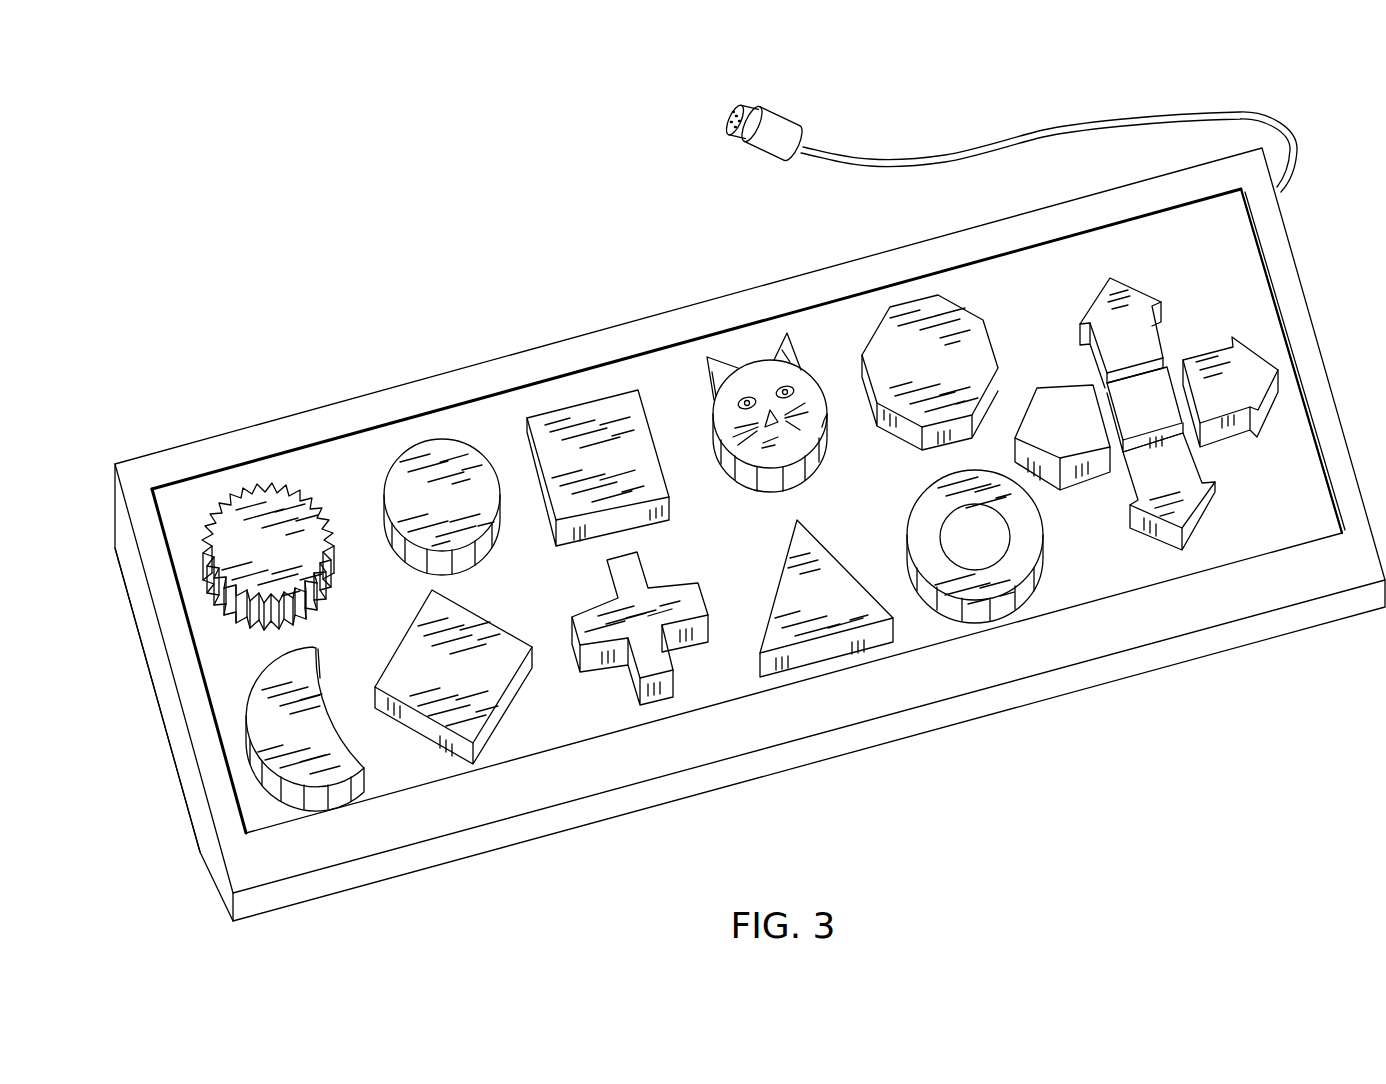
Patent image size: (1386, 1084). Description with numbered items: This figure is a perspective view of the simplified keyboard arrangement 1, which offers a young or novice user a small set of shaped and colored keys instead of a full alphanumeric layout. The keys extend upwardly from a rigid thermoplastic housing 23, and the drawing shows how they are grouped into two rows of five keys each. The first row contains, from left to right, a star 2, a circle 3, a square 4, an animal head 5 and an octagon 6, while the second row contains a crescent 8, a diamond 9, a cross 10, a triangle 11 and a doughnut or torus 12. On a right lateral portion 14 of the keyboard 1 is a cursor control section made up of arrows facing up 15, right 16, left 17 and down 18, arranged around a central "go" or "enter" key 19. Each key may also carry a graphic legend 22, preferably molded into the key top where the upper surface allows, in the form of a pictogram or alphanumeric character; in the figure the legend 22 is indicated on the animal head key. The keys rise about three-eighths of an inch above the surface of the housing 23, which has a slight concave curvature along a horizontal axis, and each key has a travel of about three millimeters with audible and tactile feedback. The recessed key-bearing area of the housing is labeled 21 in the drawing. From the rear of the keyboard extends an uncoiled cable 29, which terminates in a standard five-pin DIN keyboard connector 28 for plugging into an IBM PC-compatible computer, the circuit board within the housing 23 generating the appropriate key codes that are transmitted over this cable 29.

The simplified keyboard arrangement 1 is at (458, 852).
The star 2 is at (258, 556).
The circle 3 is at (434, 516).
The square 4 is at (589, 471).
The animal head 5 is at (754, 394).
The octagon 6 is at (923, 377).
The crescent 8 is at (281, 737).
The diamond 9 is at (444, 682).
The cross 10 is at (617, 596).
The triangle 11 is at (802, 602).
The doughnut or torus 12 is at (960, 554).
The right lateral portion 14 is at (1267, 524).
The arrow facing up 15 is at (1110, 347).
The arrow facing right 16 is at (1212, 399).
The arrow facing left 17 is at (1050, 437).
The arrow facing down 18 is at (1157, 492).
The "go" or "enter" key 19 is at (1138, 417).
The recessed key area 21 is at (545, 732).
The graphic legend 22 is at (823, 427).
The housing 23 is at (143, 590).
The 5 pin DIN keyboard connector 28 is at (781, 112).
The uncoiled cable 29 is at (1111, 118).